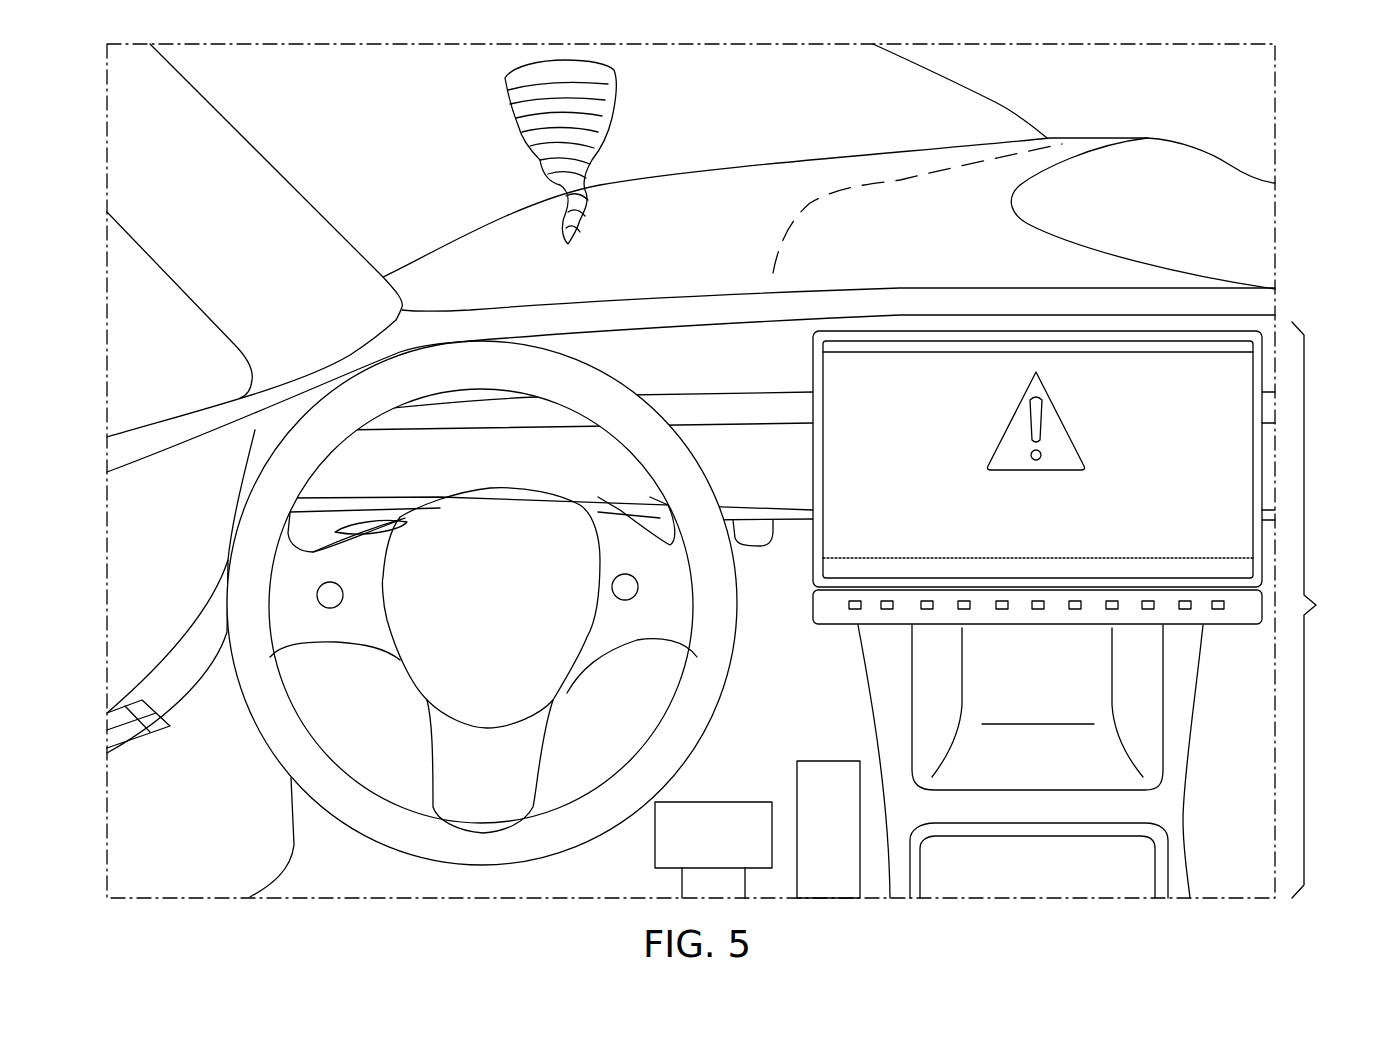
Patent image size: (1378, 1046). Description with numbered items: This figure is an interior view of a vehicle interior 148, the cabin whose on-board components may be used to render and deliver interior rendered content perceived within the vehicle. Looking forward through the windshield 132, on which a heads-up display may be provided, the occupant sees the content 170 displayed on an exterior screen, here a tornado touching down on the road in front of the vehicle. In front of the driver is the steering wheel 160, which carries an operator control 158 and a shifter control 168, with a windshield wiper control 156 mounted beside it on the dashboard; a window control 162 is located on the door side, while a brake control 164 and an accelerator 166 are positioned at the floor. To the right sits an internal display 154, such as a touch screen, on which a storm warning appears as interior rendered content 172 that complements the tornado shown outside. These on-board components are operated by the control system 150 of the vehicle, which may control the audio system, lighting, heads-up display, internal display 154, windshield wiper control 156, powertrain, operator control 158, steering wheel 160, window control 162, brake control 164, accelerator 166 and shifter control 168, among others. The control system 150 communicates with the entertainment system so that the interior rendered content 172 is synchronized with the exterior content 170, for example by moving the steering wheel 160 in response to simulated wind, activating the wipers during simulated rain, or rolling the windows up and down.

The windshield 132 is at (226, 80).
The vehicle interior 148 is at (176, 827).
The control system 150 is at (1089, 564).
The internal display 154 is at (1198, 612).
The windshield wiper control 156 is at (747, 532).
The operator control 158 is at (335, 600).
The steering wheel 160 is at (482, 561).
The window control 162 is at (128, 680).
The brake control 164 is at (735, 802).
The accelerator 166 is at (822, 773).
The shifter control 168 is at (365, 527).
The content 170 is at (697, 88).
The interior rendered content 172 is at (997, 378).